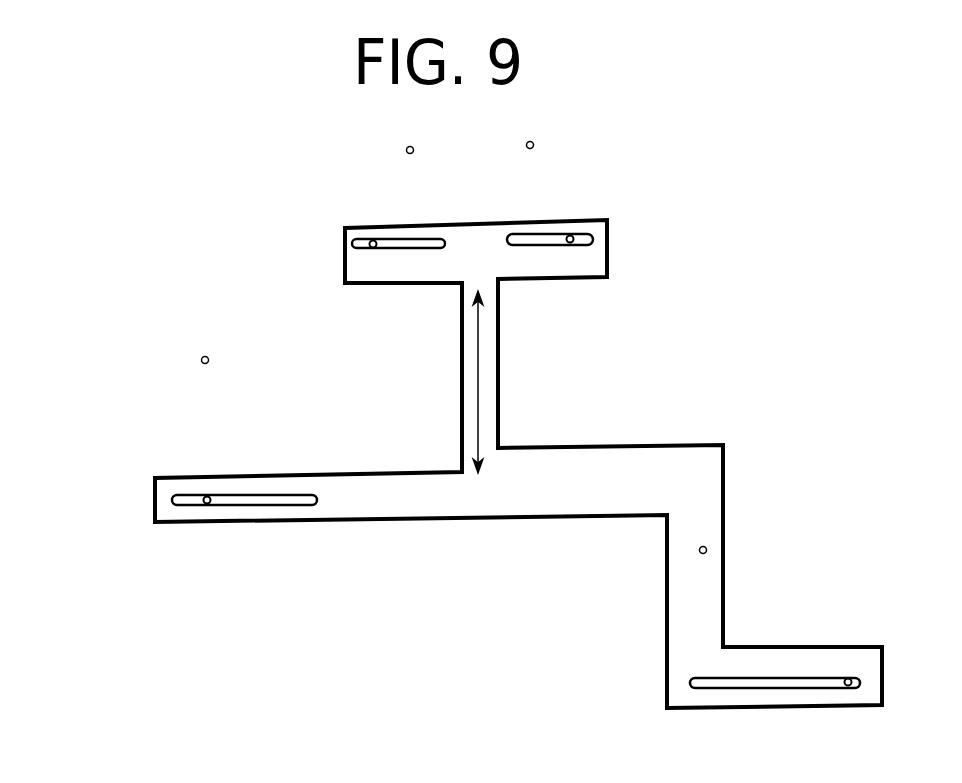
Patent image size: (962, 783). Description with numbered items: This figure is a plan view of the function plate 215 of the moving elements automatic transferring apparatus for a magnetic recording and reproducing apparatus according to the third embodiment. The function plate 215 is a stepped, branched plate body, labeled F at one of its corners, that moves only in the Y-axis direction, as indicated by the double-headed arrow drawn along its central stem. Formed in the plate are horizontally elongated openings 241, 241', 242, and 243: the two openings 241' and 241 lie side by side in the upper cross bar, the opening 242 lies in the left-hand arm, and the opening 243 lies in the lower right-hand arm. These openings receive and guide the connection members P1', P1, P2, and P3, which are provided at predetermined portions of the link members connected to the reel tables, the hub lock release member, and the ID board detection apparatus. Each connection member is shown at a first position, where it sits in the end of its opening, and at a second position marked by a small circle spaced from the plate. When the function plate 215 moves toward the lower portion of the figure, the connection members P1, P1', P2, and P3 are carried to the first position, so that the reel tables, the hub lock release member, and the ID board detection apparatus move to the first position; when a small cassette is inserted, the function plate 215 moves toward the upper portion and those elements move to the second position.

The function plate 215 is at (619, 468).
The first horizontal elongated opening 241 is at (550, 292).
The first horizontal elongated opening 241' is at (390, 294).
The second horizontal elongated opening 242 is at (268, 500).
The third horizontal elongated opening 243 is at (748, 690).
The frame F is at (712, 443).
The connection member P1 is at (648, 174).
The connection member P1' is at (280, 173).
The connection member P2 is at (192, 560).
The connection member P3 is at (707, 550).